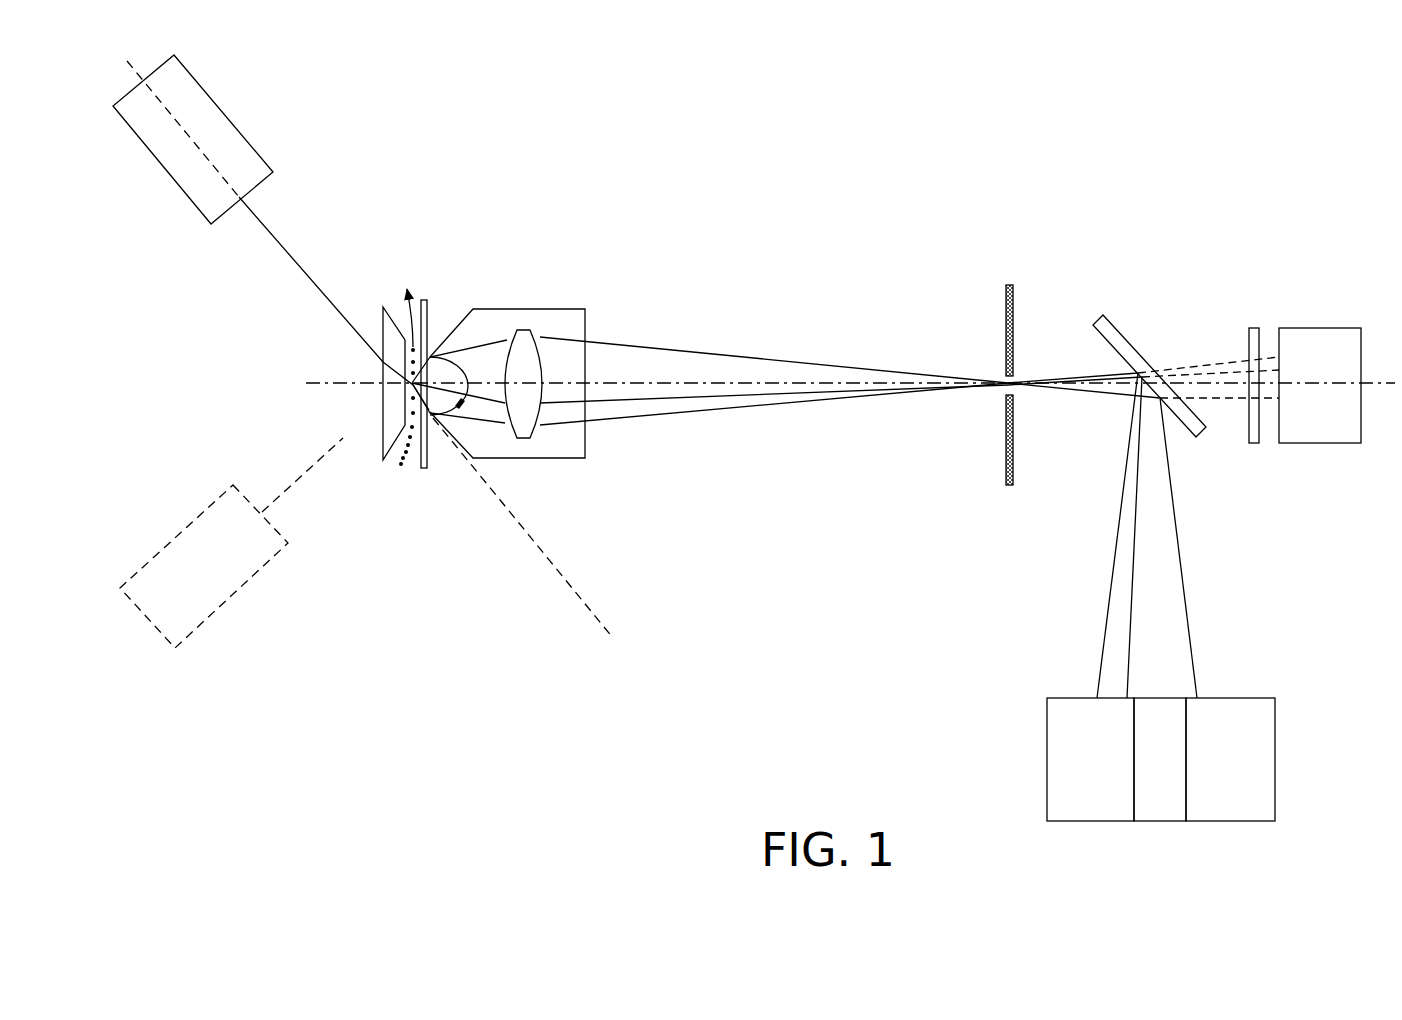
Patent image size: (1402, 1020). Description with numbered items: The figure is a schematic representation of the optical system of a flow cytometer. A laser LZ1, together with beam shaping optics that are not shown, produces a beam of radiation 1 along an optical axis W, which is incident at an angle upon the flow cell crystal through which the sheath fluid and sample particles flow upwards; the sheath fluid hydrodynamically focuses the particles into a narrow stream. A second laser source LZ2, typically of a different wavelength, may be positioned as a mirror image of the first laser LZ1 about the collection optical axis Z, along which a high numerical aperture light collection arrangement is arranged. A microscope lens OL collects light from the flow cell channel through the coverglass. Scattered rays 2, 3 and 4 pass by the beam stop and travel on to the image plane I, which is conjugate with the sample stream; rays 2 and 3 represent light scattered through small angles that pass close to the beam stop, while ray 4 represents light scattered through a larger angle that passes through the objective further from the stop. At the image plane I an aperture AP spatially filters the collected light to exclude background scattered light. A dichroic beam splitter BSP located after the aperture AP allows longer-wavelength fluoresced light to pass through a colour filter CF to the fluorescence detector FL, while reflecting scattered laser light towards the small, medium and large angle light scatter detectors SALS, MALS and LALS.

The laser LZ1 is at (193, 139).
The second laser source LZ2 is at (231, 543).
The beam of radiation 1 is at (318, 272).
The second optical axis Z is at (321, 381).
The optical axis W is at (594, 606).
The microscope lens OL is at (513, 300).
The scattered ray 2 is at (741, 422).
The scattered ray 3 is at (638, 414).
The scattered ray 4 is at (656, 338).
The detection aperture AP is at (994, 372).
The image plane I is at (1010, 497).
The dichroic beam splitter BSP is at (1096, 319).
The colour filter CF is at (1246, 328).
The fluorescence detector FL is at (1320, 385).
The small angle light scatter detector SALS is at (1092, 597).
The medium angle light scatter detector MALS is at (1156, 599).
The large angle light scatter detector LALS is at (1217, 609).